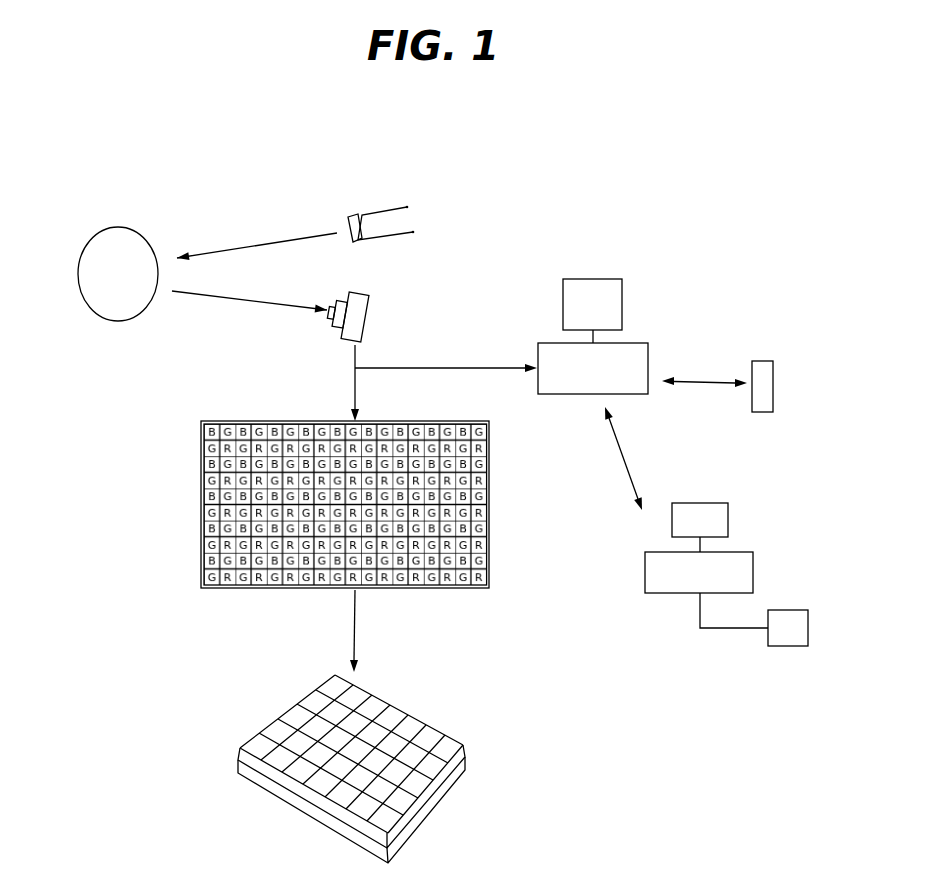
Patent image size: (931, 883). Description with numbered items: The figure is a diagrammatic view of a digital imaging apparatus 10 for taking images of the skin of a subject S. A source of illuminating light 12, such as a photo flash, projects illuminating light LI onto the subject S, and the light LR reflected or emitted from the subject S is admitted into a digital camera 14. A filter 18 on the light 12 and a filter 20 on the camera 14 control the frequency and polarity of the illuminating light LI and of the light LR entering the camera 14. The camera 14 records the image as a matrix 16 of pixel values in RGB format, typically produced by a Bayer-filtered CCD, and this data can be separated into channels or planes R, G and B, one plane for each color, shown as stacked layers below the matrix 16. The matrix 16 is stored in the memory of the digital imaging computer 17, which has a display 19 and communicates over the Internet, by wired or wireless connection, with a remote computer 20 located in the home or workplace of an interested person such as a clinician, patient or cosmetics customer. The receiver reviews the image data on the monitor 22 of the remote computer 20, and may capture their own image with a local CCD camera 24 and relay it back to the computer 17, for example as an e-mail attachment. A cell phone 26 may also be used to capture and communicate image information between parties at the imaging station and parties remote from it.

The subject S is at (102, 293).
The illuminating light LI is at (228, 246).
The reflected or emitted light LR is at (223, 298).
The digital imaging apparatus 10 is at (314, 193).
The source of illuminating light 12 is at (388, 207).
The filter 18 is at (350, 215).
The digital camera 14 is at (357, 312).
The filter / remote computer 20 is at (333, 322).
The matrix of pixel values 16 is at (488, 439).
The computer 17 is at (627, 387).
The display 19 is at (600, 288).
The cell phone 26 is at (767, 370).
The monitor 22 is at (708, 508).
The local CCD camera 24 is at (790, 638).
The green plane G is at (443, 738).
The red plane R is at (457, 777).
The blue plane B is at (457, 792).